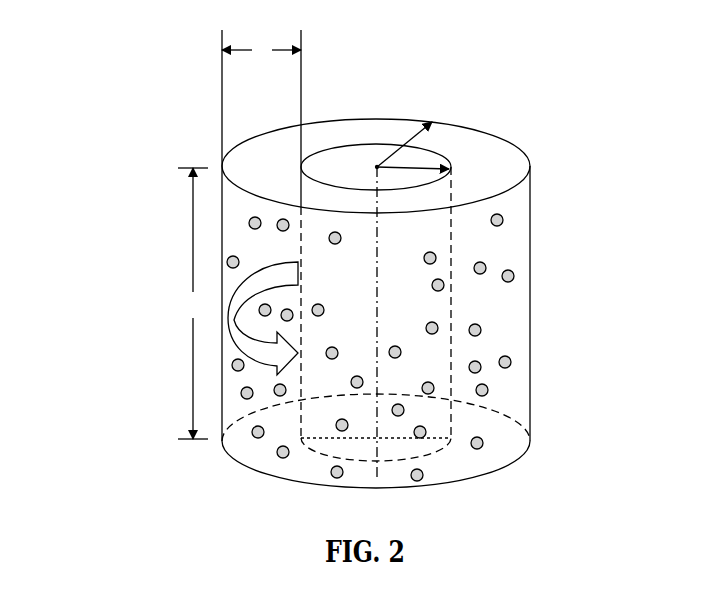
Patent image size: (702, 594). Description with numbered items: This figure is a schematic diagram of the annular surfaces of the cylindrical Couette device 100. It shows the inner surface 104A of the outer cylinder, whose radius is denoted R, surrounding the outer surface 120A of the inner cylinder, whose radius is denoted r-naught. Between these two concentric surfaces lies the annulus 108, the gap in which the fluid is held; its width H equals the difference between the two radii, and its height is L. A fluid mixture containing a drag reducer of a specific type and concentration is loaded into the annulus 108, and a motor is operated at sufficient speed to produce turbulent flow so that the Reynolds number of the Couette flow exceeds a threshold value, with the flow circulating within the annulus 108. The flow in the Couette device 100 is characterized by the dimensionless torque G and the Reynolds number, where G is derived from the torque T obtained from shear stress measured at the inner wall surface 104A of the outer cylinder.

The cylindrical Couette device 100 is at (174, 71).
The inner surface of the outer cylinder 104A is at (513, 147).
The annulus 108 is at (280, 147).
The outer surface of the inner cylinder 120A is at (368, 142).